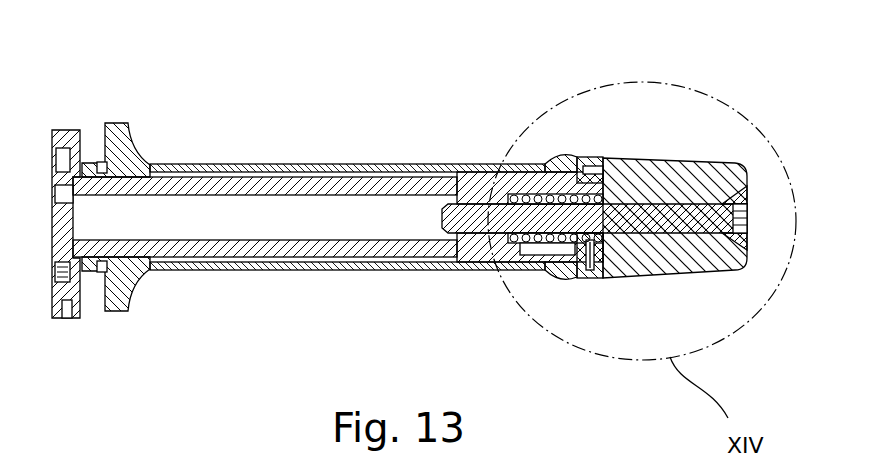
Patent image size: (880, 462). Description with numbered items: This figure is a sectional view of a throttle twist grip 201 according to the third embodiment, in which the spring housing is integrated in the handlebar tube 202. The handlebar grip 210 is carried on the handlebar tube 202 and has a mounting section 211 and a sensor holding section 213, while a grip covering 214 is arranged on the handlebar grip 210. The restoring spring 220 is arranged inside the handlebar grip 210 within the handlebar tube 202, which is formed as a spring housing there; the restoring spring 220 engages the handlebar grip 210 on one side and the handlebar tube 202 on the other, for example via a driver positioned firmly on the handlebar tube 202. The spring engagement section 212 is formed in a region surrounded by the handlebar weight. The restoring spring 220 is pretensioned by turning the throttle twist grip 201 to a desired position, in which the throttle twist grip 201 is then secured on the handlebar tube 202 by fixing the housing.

The throttle twist grip 201 is at (500, 83).
The handlebar tube 202 is at (195, 248).
The handlebar grip 210 is at (463, 262).
The mounting section 211 is at (88, 145).
The spring engagement section 212 is at (595, 265).
The sensor holding section 213 is at (68, 318).
The grip covering 214 is at (350, 268).
The restoring spring 220 is at (545, 200).